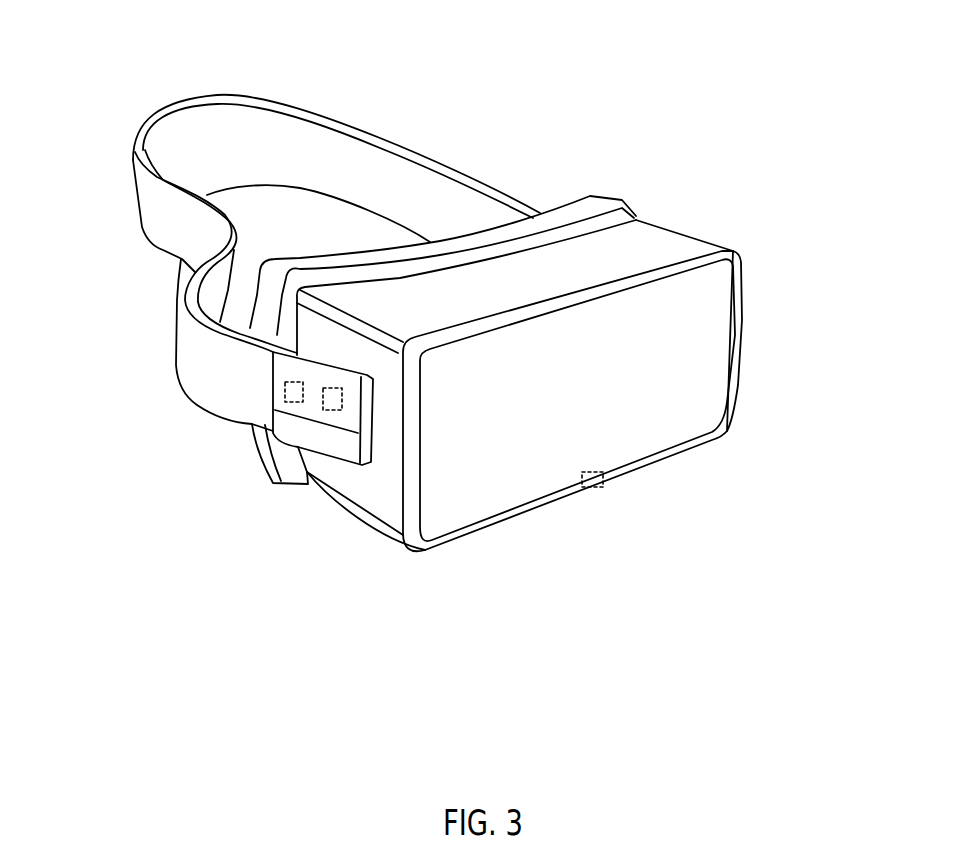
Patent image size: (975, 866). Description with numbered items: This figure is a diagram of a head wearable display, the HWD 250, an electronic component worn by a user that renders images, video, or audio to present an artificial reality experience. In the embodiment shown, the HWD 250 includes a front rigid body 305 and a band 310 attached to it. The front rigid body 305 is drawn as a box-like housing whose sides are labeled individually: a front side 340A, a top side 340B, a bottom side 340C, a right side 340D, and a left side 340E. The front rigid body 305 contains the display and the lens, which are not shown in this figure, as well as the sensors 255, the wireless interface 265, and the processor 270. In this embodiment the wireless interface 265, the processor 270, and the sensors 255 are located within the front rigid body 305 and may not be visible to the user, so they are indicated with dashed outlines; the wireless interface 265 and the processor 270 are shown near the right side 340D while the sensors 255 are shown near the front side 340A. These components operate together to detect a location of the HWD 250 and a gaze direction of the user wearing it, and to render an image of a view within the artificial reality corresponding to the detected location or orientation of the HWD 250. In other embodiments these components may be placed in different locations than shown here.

The head wearable display 250 is at (65, 44).
The band 310 is at (445, 168).
The front rigid body 305 is at (469, 394).
The front side 340A is at (663, 436).
The top side 340B is at (360, 295).
The bottom side 340C is at (324, 533).
The right side 340D is at (374, 500).
The left side 340E is at (719, 225).
The wireless interface 265 is at (263, 389).
The processor 270 is at (301, 418).
The sensors 255 is at (600, 503).